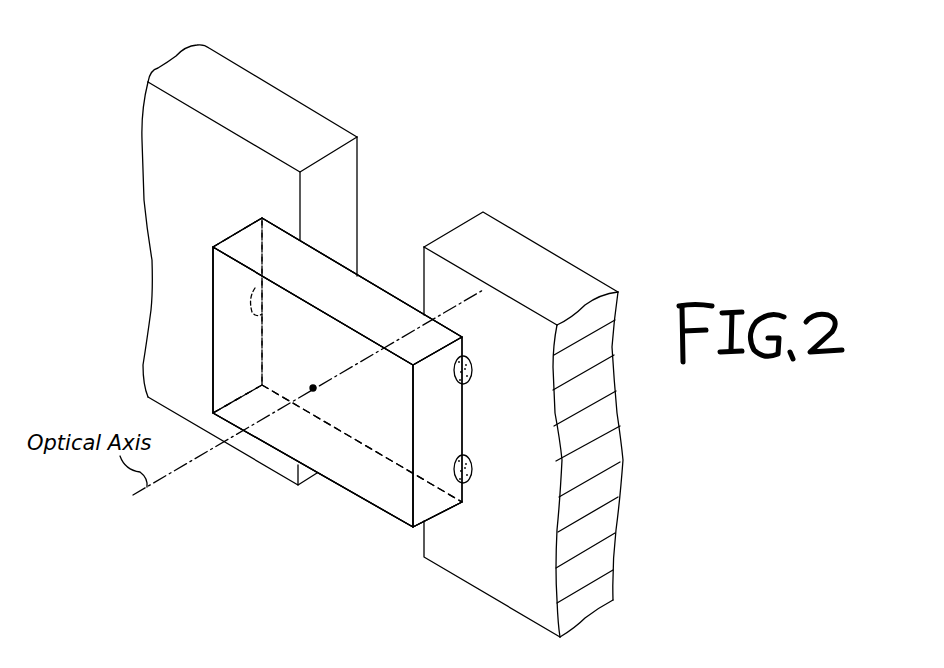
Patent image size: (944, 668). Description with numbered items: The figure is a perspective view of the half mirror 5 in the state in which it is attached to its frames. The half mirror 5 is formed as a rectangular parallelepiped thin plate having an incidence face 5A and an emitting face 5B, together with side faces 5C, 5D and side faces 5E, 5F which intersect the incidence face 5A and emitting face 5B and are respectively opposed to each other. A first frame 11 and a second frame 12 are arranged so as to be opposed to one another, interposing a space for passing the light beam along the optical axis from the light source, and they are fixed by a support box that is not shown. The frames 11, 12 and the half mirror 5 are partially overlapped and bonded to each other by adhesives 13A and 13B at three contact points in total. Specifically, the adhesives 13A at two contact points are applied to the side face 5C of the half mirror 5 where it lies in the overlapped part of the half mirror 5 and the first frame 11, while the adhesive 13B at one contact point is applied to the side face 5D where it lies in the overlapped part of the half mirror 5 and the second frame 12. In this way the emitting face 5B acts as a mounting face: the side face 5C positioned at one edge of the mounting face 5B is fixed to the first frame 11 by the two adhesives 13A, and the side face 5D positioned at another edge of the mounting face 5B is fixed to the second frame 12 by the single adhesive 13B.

The second frame 12 is at (222, 90).
The first frame 11 is at (537, 280).
The half mirror 5 is at (262, 432).
The incidence face 5A is at (353, 472).
The emitting face 5B is at (387, 288).
The side face 5C is at (448, 423).
The side face 5D is at (235, 352).
The side face 5E is at (315, 270).
The side face 5F is at (402, 500).
The adhesives 13A is at (472, 372).
The adhesive 13B is at (255, 300).